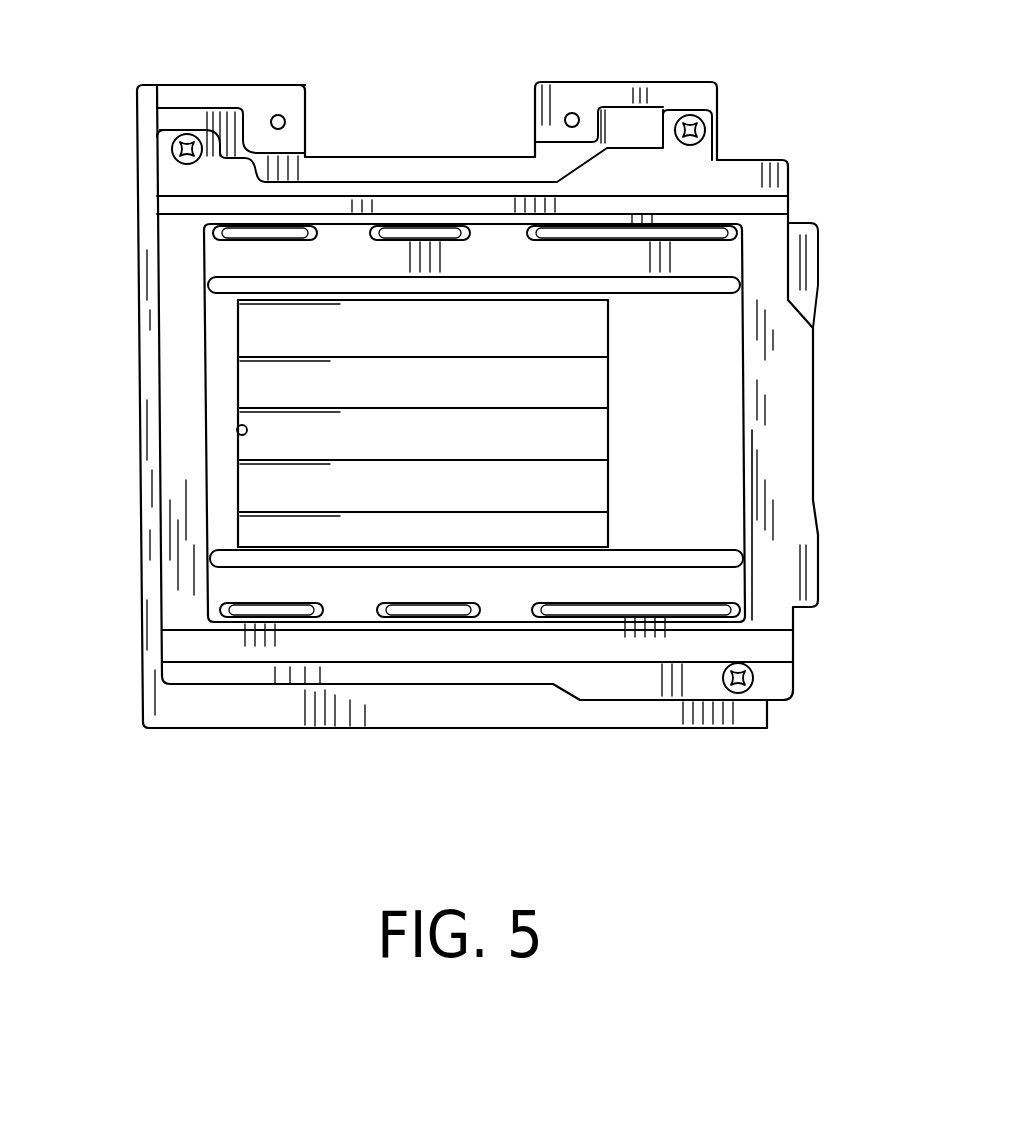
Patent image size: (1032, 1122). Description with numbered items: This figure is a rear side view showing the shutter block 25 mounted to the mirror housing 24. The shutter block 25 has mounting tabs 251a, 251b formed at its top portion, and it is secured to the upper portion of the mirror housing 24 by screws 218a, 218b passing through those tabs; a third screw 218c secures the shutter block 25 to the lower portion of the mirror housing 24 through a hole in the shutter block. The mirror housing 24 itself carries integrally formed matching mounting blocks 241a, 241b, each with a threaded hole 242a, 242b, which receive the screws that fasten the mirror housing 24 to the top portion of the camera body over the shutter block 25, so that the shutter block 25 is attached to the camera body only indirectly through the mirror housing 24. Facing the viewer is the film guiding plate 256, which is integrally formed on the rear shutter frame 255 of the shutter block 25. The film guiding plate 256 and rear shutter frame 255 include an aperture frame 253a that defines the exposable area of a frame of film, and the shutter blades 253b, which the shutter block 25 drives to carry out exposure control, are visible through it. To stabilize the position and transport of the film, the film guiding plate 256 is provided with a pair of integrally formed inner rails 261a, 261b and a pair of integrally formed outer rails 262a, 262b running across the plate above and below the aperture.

The mirror housing 24 is at (242, 730).
The shutter block 25 is at (787, 160).
The screw 218a is at (185, 133).
The screw 218b is at (695, 115).
The screw 218c is at (750, 692).
The matching mounting block 241a is at (268, 98).
The matching mounting block 241b is at (569, 82).
The threaded hole 242a is at (286, 122).
The threaded hole 242b is at (565, 118).
The mounting tab 251a is at (168, 173).
The mounting tab 251b is at (677, 165).
The aperture frame 253a is at (237, 430).
The shutter blades 253b is at (268, 383).
The rear shutter frame 255 is at (180, 323).
The film guiding plate 256 is at (715, 430).
The inner rail 261a is at (639, 281).
The inner rail 261b is at (715, 512).
The outer rail 262a is at (700, 240).
The outer rail 262b is at (700, 603).